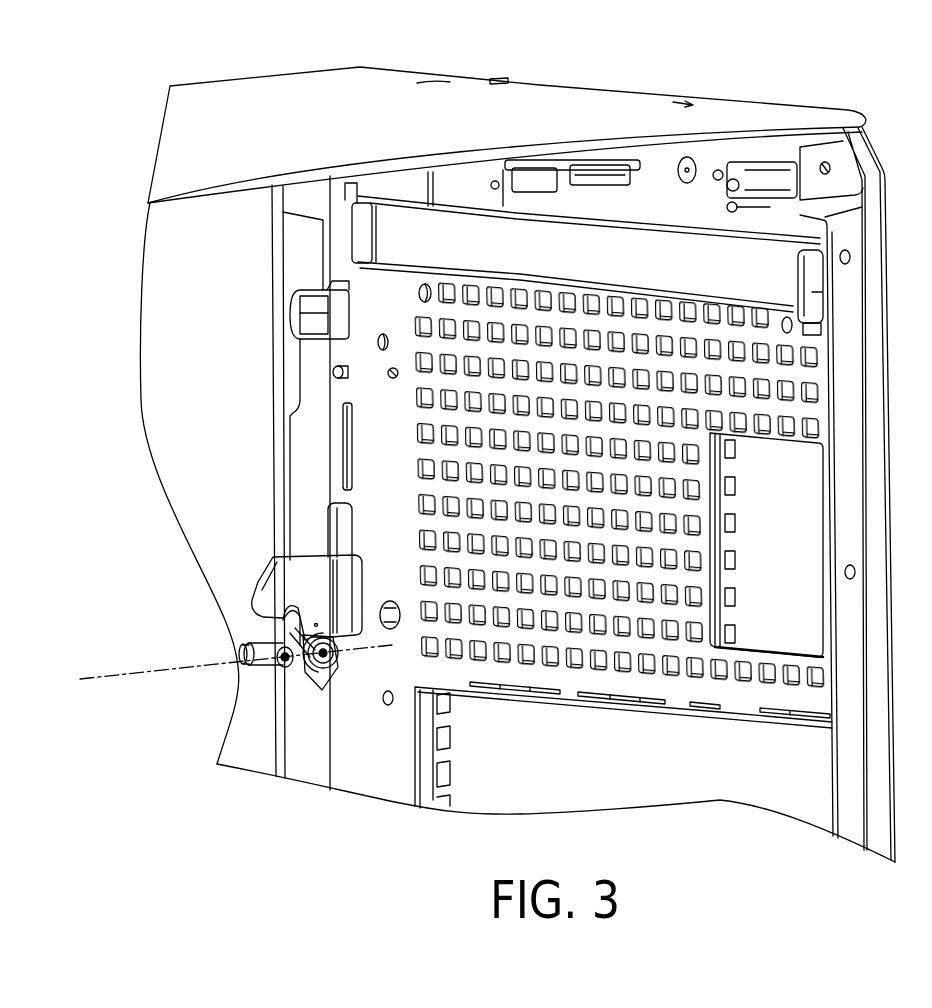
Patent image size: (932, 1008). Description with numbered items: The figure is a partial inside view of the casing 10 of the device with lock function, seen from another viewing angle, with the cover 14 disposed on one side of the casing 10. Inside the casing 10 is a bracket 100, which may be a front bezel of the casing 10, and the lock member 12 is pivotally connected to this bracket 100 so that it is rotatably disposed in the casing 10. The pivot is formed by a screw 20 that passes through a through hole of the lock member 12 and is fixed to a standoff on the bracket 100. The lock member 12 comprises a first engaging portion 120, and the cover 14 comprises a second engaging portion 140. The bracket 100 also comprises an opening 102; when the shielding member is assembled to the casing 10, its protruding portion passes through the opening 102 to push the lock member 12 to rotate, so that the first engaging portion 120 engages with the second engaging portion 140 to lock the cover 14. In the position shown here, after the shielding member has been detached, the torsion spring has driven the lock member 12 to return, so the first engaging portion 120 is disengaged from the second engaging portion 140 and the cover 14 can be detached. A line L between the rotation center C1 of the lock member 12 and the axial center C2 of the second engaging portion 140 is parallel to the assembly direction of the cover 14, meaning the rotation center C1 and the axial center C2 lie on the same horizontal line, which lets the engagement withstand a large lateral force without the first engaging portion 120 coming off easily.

The casing 10 is at (292, 73).
The cover 14 is at (213, 223).
The bracket 100 is at (297, 426).
The opening 102 is at (343, 525).
The lock member 12 is at (297, 578).
The first engaging portion 120 is at (280, 620).
The second engaging portion 140 is at (282, 660).
The screw 20 is at (318, 663).
The line L is at (92, 676).
The rotation center C1 is at (324, 658).
The axial center C2 is at (282, 662).